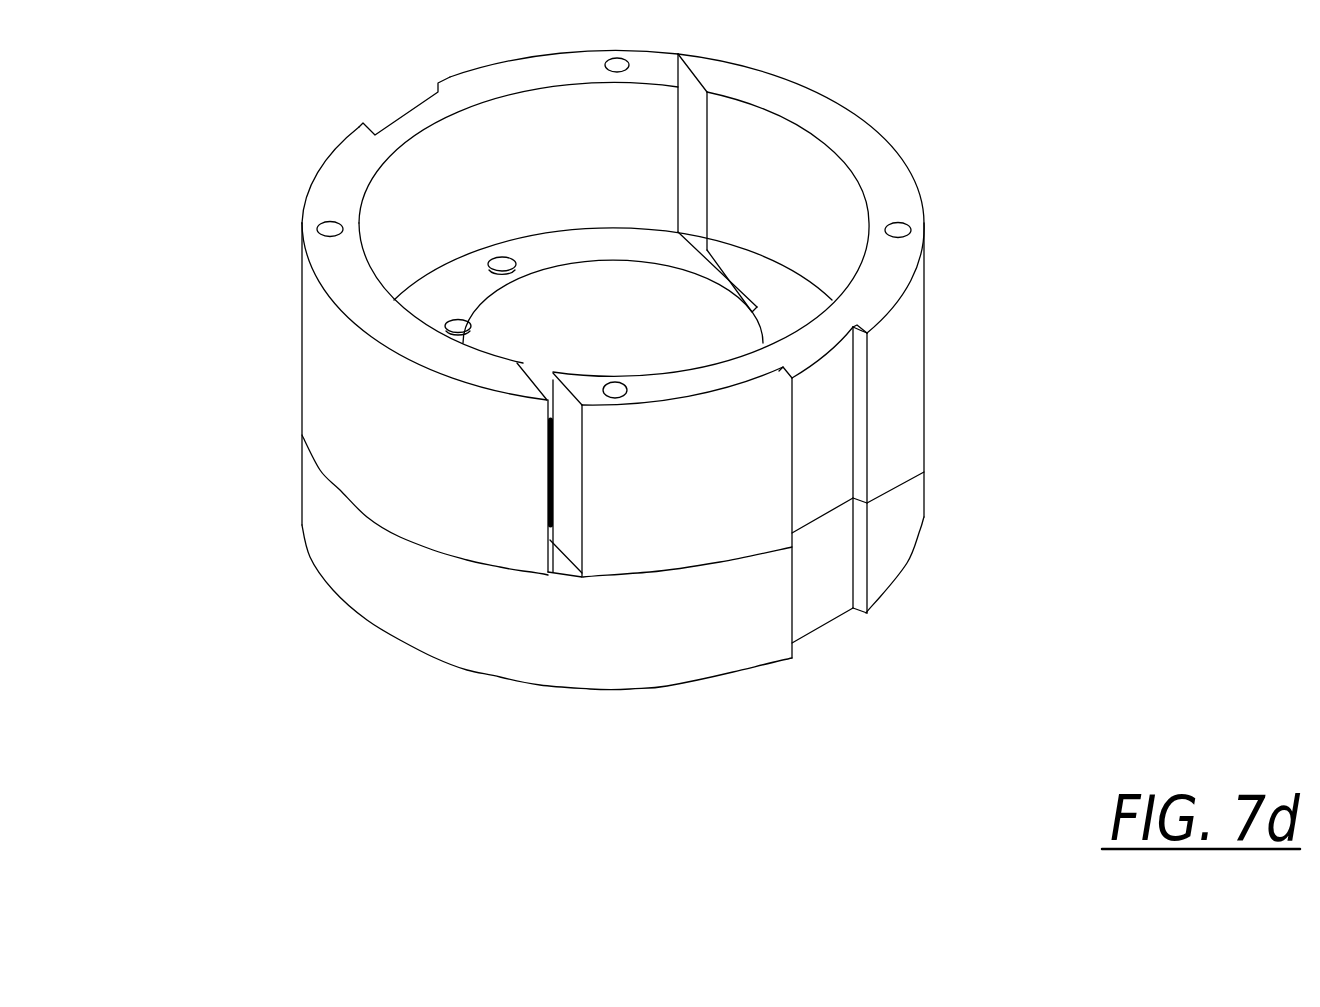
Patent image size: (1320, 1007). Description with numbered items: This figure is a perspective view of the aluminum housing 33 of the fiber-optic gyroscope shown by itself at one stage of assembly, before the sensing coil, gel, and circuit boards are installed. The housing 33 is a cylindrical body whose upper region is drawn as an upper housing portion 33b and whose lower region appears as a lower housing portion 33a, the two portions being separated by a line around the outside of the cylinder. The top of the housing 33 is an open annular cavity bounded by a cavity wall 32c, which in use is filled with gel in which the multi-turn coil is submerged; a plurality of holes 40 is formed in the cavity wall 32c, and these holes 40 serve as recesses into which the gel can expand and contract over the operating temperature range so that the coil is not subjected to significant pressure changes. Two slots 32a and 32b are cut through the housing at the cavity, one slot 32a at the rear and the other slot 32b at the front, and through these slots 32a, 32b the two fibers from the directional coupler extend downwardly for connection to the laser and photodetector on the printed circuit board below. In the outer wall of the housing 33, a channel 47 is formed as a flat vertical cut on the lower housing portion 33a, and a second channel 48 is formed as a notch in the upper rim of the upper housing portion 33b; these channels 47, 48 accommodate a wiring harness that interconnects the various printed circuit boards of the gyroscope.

The housing 33 is at (250, 348).
The lower housing portion 33a is at (925, 468).
The upper housing portion 33b is at (866, 125).
The slot 32a is at (708, 257).
The slot 32b is at (537, 372).
The cavity wall 32c is at (573, 255).
The holes 40 is at (457, 320).
The channel 47 is at (818, 602).
The channel 48 is at (393, 117).